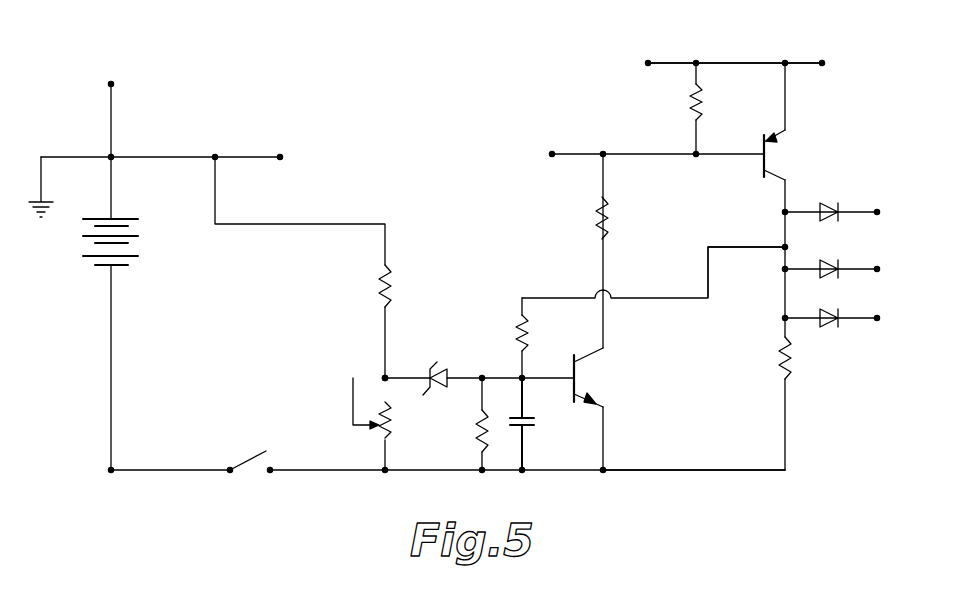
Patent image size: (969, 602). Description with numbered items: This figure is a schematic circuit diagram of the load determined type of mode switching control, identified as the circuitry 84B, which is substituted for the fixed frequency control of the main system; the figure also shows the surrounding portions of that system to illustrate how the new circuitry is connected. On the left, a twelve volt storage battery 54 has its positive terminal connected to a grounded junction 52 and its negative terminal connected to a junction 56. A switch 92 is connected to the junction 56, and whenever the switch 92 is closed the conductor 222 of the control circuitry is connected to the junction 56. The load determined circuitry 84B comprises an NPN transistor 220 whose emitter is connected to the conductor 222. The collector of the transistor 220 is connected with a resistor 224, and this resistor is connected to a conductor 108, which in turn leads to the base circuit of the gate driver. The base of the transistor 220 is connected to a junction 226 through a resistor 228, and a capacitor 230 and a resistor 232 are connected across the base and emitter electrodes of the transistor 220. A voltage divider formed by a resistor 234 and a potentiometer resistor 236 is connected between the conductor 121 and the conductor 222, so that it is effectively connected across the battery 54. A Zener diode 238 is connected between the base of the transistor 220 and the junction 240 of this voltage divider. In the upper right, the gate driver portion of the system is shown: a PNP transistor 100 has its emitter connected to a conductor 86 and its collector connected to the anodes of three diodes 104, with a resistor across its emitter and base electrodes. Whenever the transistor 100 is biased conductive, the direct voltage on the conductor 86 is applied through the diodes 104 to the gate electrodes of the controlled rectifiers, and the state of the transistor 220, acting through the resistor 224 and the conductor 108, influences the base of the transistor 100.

The junction 52 is at (109, 156).
The conductor 121 is at (150, 157).
The storage battery 54 is at (137, 221).
The junction 56 is at (108, 471).
The switch 92 is at (243, 470).
The resistor 234 is at (381, 290).
The junction of the voltage divider 240 is at (383, 376).
The potentiometer resistor 236 is at (377, 428).
The Zener diode 238 is at (452, 347).
The resistor 232 is at (471, 430).
The capacitor 230 is at (531, 426).
The resistor 228 is at (518, 336).
The NPN transistor 220 is at (591, 359).
The resistor 224 is at (608, 219).
The junction 226 is at (781, 256).
The conductor 222 is at (642, 472).
The load determined mode switching control 84B is at (483, 208).
The conductor 86 is at (725, 63).
The conductor 108 is at (612, 154).
The PNP transistor 100 is at (783, 175).
The diodes 104 is at (825, 262).